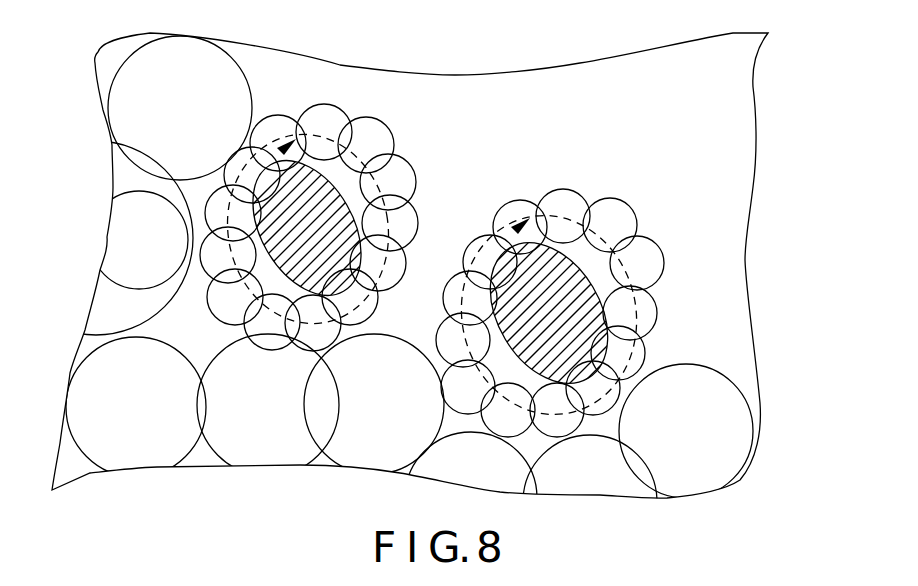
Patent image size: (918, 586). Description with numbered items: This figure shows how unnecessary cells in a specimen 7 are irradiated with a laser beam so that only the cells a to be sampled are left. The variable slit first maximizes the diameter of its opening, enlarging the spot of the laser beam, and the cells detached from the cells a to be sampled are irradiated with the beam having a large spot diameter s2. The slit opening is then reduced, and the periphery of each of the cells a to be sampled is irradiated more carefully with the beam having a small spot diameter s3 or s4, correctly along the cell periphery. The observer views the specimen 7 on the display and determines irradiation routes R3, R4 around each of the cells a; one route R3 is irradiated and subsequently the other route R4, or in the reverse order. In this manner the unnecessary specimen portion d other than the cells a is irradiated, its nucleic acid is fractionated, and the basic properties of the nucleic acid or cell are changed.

The specimen 7 is at (710, 123).
The unnecessary specimen portion d is at (737, 288).
The cells a is at (335, 213).
The irradiation route R3 is at (405, 165).
The irradiation route R4 is at (643, 247).
The spot diameter s2 is at (207, 407).
The spot diameter s3 is at (298, 132).
The spot diameter s4 is at (540, 215).